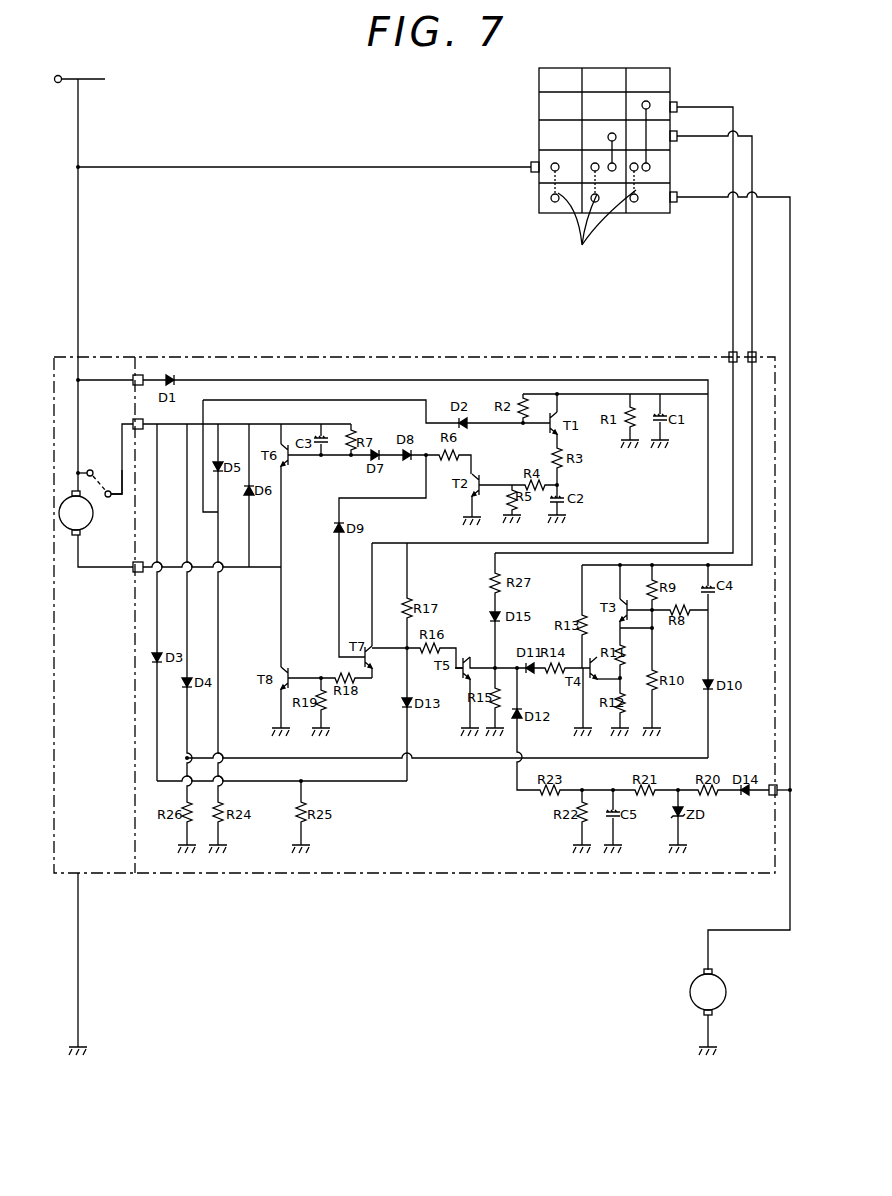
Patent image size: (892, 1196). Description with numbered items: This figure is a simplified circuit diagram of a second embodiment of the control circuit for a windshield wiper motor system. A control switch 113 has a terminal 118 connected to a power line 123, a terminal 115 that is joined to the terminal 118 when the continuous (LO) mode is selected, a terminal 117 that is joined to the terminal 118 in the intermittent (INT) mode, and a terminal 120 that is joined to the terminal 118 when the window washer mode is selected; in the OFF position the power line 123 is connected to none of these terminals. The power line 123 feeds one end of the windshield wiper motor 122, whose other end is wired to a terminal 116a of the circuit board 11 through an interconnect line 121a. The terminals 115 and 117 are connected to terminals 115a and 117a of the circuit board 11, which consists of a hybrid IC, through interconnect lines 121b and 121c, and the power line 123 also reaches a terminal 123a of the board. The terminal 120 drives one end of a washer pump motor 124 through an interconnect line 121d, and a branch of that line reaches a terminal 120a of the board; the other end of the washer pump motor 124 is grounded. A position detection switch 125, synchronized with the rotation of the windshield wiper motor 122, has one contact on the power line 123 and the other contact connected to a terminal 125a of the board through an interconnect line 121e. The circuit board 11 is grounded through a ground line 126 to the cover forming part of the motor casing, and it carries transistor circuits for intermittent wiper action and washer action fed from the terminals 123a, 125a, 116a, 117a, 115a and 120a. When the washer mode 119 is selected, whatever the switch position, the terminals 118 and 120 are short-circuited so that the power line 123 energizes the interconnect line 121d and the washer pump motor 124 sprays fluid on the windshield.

The circuit board 11 is at (158, 870).
The control switch 113 is at (528, 108).
The terminal 115 is at (679, 104).
The terminal 115a is at (731, 352).
The terminal 116a is at (131, 578).
The terminal 117 is at (679, 139).
The terminal 117a is at (753, 347).
The terminal 118 is at (530, 173).
The washer mode 119 is at (582, 245).
The terminal 120 is at (679, 201).
The terminal 120a is at (769, 785).
The interconnect line 121a is at (108, 567).
The interconnect line 121b is at (731, 272).
The interconnect line 121c is at (750, 275).
The interconnect line 121d is at (745, 932).
The interconnect line 121e is at (120, 500).
The windshield wiper motor 122 is at (68, 530).
The power line 123 is at (294, 170).
The terminal 123a is at (133, 375).
The washer pump motor 124 is at (690, 1002).
The position detection switch 125 is at (104, 466).
The terminal 125a is at (131, 421).
The ground line 126 is at (78, 962).